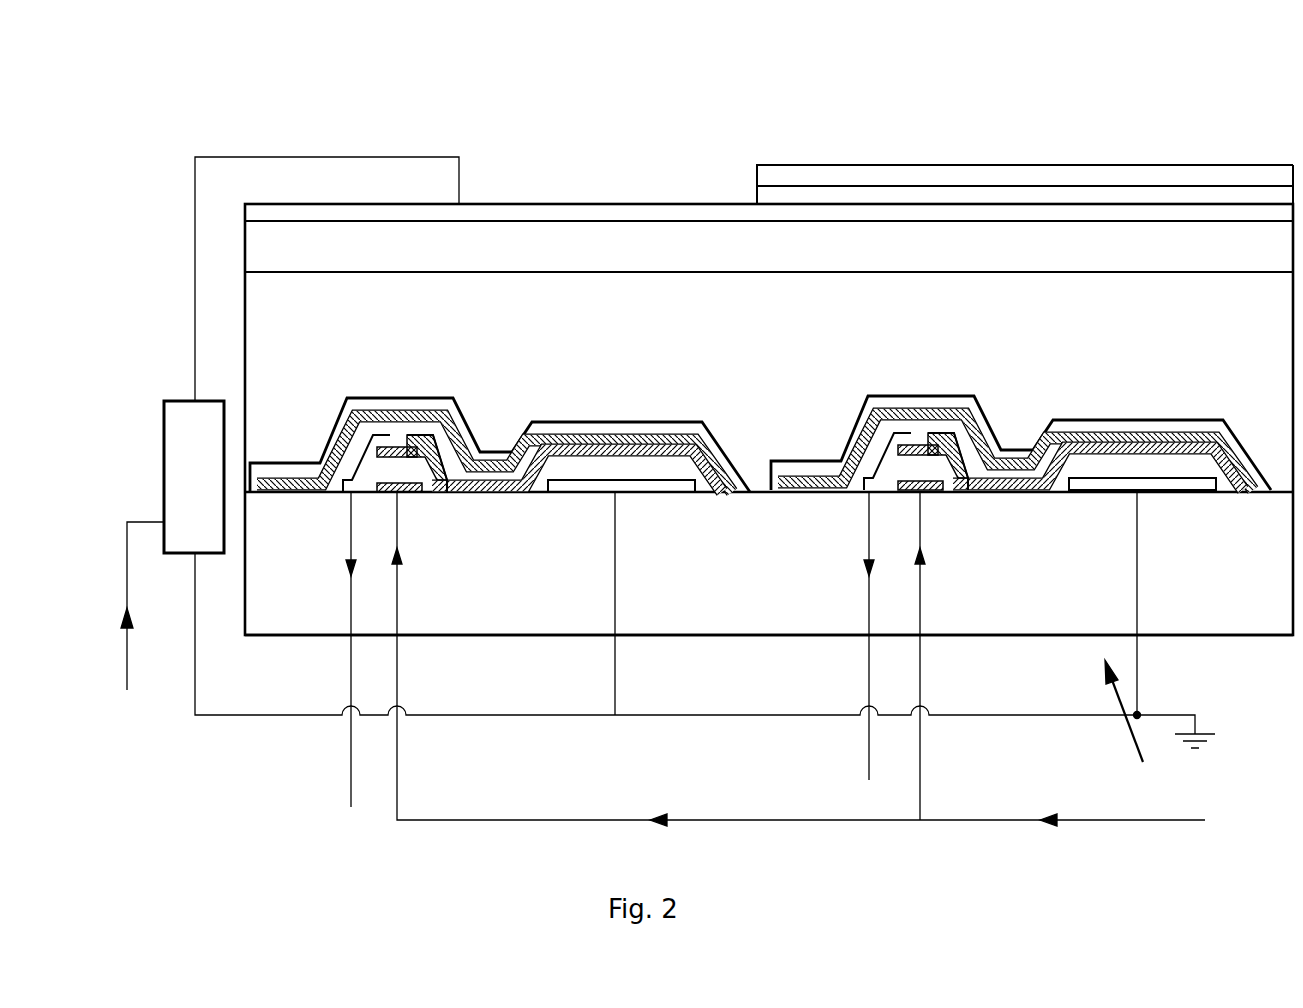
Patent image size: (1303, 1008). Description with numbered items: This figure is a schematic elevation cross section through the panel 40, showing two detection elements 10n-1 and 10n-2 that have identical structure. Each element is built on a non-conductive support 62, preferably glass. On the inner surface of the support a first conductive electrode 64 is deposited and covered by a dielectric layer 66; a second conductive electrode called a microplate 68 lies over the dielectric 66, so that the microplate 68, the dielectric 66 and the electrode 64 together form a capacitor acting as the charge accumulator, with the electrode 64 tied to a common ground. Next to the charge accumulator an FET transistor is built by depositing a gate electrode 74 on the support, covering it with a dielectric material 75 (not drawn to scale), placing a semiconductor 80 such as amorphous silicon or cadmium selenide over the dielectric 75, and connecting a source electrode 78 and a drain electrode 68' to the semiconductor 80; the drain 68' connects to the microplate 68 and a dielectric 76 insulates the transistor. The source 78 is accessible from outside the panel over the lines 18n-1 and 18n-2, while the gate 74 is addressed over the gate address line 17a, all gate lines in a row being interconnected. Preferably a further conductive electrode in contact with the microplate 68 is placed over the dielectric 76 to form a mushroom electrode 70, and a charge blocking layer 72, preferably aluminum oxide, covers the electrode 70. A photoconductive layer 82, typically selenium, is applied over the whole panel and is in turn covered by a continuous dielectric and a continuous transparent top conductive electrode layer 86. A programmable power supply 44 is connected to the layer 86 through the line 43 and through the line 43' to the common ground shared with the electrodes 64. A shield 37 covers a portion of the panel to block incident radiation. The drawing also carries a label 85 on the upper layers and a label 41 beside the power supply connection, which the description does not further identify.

The panel 40 is at (638, 120).
The top conductive electrode layer 86 is at (615, 210).
The shield 37 is at (868, 178).
The color filter / electrode layer 85 is at (1075, 192).
The line 43 is at (279, 279).
The line 43' is at (705, 662).
The programmable power supply 44 is at (194, 477).
The input signal 41 is at (137, 625).
The detection element 10n-1 is at (528, 503).
The detection element 10n-2 is at (1030, 378).
The source electrode 78 is at (340, 420).
The semiconductor 80 is at (400, 445).
The drain electrode 68' is at (460, 392).
The dielectric 76 is at (442, 436).
The charge blocking layer 72 is at (568, 428).
The mushroom electrode 70 is at (632, 432).
The microplate 68 is at (741, 403).
The dielectric layer 66 is at (670, 462).
The photoconductive layer 82 is at (995, 323).
The dielectric material 75 is at (378, 478).
The gate electrode 74 is at (402, 495).
The first conductive electrode 64 is at (635, 495).
The non-conductive support 62 is at (1240, 562).
The gate address line 17a is at (397, 795).
The line 18n-1 is at (350, 782).
The line 18n-2 is at (869, 767).